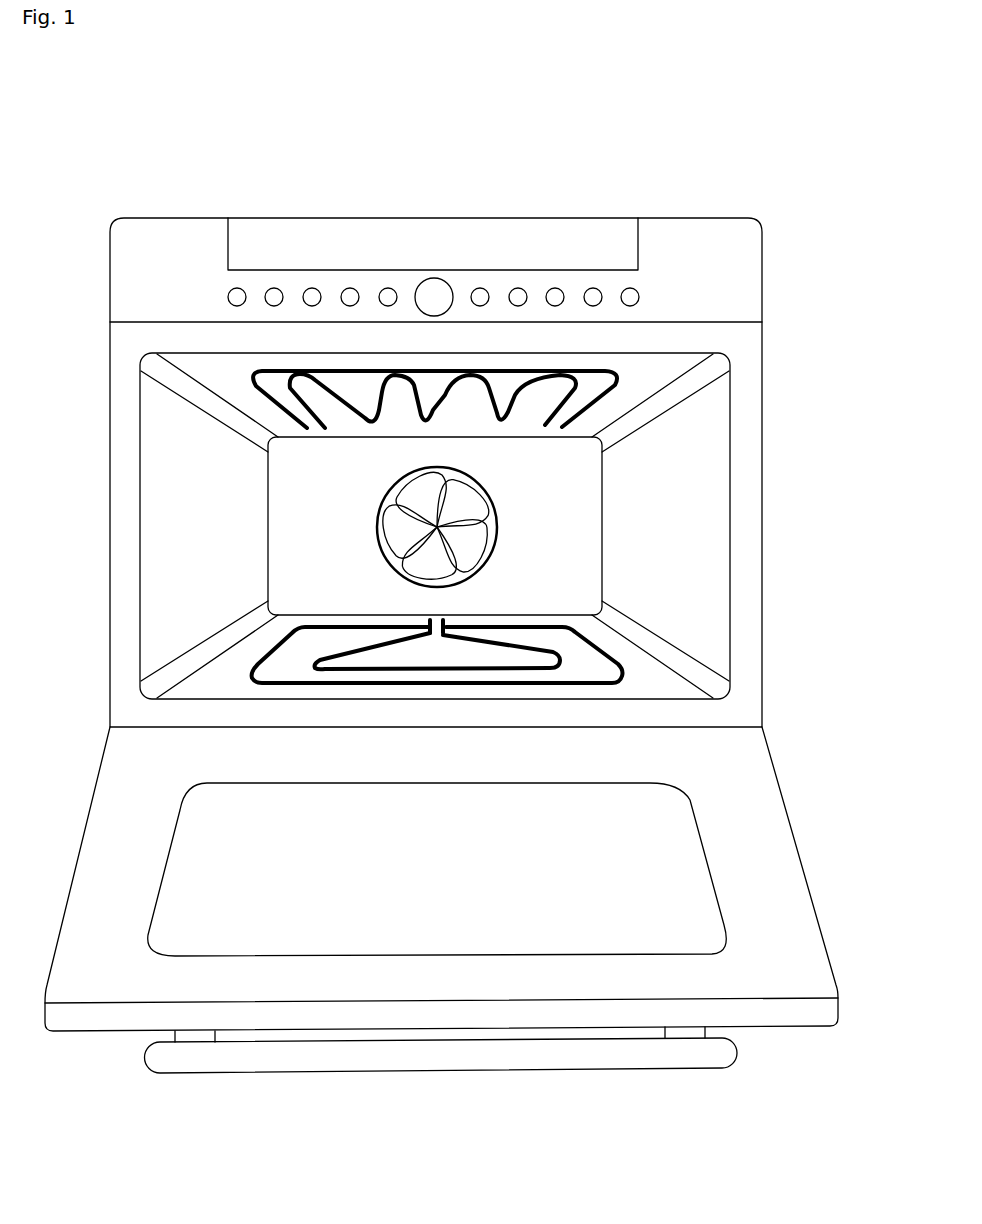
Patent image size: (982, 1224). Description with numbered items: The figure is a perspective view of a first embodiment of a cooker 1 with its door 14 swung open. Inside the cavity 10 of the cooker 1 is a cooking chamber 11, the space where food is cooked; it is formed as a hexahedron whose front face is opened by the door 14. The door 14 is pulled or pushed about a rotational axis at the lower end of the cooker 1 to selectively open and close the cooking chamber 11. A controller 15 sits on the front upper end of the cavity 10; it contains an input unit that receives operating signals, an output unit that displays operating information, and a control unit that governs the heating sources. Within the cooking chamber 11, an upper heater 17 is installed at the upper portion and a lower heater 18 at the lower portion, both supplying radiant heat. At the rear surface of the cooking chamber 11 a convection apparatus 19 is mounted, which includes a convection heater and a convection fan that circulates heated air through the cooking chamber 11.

The cooker 1 is at (453, 570).
The cavity 10 is at (740, 358).
The cooking chamber 11 is at (584, 545).
The door 14 is at (758, 847).
The controller 15 is at (700, 237).
The upper heater 17 is at (539, 371).
The lower heater 18 is at (600, 643).
The convection apparatus 19 is at (530, 504).